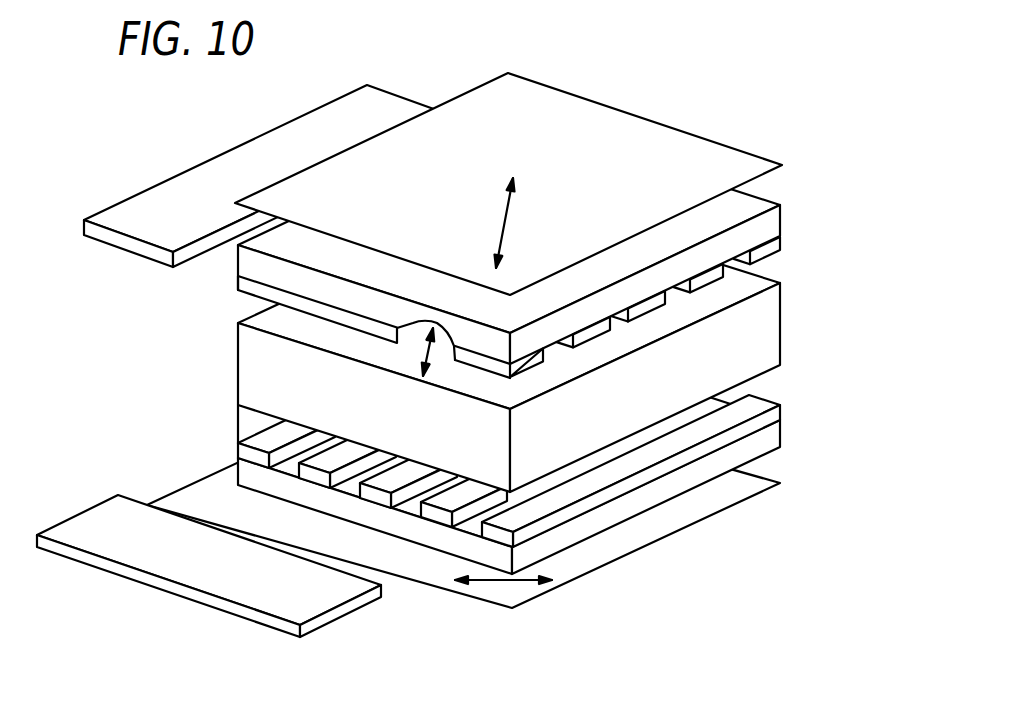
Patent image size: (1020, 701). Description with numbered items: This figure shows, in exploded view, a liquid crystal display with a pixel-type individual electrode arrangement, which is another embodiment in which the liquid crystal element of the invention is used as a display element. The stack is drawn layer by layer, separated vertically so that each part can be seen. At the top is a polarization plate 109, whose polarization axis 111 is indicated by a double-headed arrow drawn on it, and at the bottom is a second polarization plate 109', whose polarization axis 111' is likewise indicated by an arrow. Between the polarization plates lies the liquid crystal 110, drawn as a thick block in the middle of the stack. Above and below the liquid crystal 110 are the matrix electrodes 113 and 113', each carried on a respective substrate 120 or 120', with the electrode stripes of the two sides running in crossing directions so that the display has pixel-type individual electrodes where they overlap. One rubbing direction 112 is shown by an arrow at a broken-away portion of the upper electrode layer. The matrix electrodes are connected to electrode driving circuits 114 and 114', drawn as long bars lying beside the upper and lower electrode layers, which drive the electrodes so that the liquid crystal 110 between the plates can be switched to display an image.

The polarization plate 109 is at (508, 184).
The polarization plate 109' is at (492, 494).
The liquid crystal 110 is at (772, 315).
The polarization axis 111 is at (533, 223).
The polarization axis 111' is at (503, 623).
The rubbing direction 112 is at (423, 352).
The matrix electrode 113 is at (470, 247).
The matrix electrode 113' is at (509, 464).
The electrode driving circuit 114 is at (270, 199).
The electrode driving circuit 114' is at (209, 585).
The substrate 120 is at (541, 289).
The substrate 120' is at (548, 461).